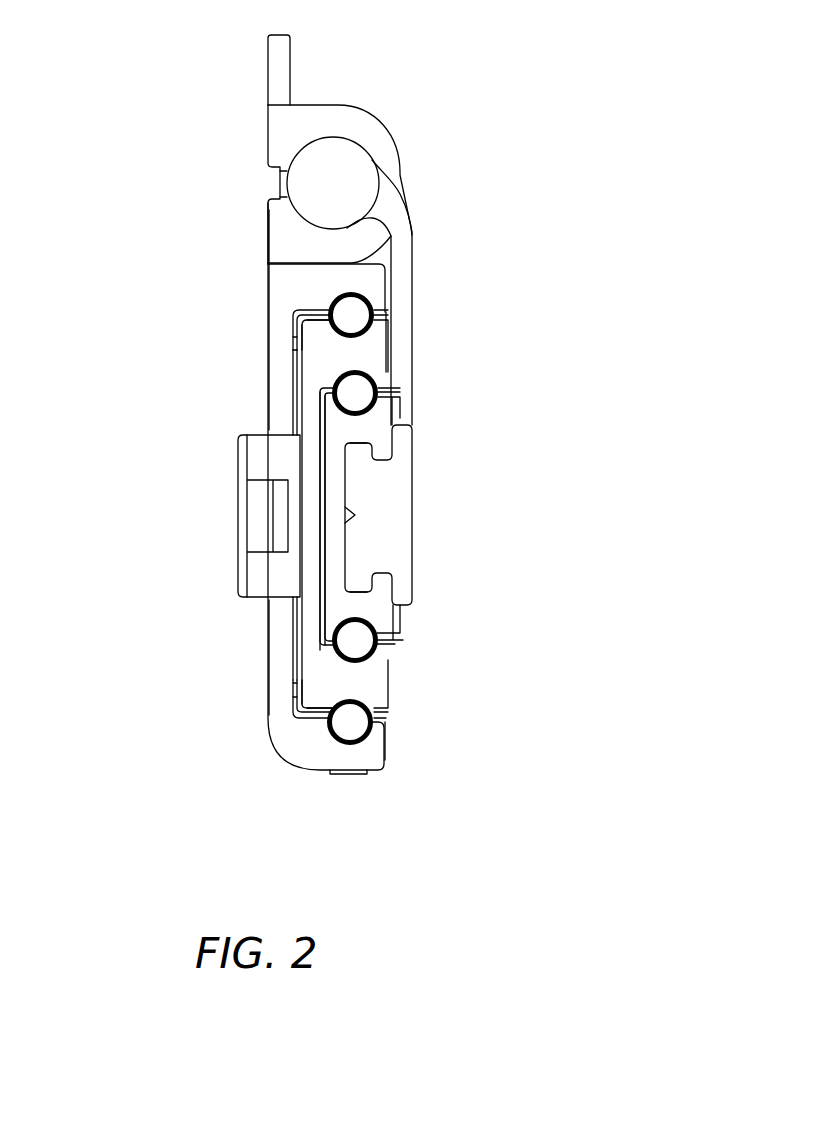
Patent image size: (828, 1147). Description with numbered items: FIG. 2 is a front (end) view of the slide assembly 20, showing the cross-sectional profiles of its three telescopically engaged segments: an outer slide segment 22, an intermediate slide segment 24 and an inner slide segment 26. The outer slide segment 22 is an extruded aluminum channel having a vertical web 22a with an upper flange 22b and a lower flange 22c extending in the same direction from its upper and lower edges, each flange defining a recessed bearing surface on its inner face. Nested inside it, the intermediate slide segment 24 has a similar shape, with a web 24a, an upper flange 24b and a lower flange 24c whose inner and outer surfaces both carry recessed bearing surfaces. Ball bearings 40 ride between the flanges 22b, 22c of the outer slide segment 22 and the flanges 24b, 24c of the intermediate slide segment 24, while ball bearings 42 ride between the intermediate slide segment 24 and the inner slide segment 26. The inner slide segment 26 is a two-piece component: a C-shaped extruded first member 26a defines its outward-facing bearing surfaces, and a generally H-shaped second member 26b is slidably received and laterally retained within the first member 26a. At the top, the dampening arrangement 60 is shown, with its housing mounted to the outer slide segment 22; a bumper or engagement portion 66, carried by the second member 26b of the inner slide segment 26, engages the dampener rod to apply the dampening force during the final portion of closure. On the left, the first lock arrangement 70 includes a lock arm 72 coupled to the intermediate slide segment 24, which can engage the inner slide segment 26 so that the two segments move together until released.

The slide assembly 20 is at (565, 198).
The outer slide segment 22 is at (264, 323).
The web 22a is at (280, 383).
The upper flange 22b is at (317, 288).
The lower flange 22c is at (305, 743).
The intermediate slide segment 24 is at (307, 590).
The web 24a is at (312, 522).
The upper flange 24b is at (353, 353).
The lower flange 24c is at (352, 680).
The inner slide segment 26 is at (420, 487).
The first member 26a is at (365, 433).
The second member 26b is at (395, 552).
The ball bearings 40 is at (357, 315).
The ball bearings 42 is at (360, 393).
The dampening arrangement 60 is at (372, 108).
The engagement portion 66 is at (350, 163).
The first lock arrangement 70 is at (178, 460).
The lock arm 72 is at (255, 508).